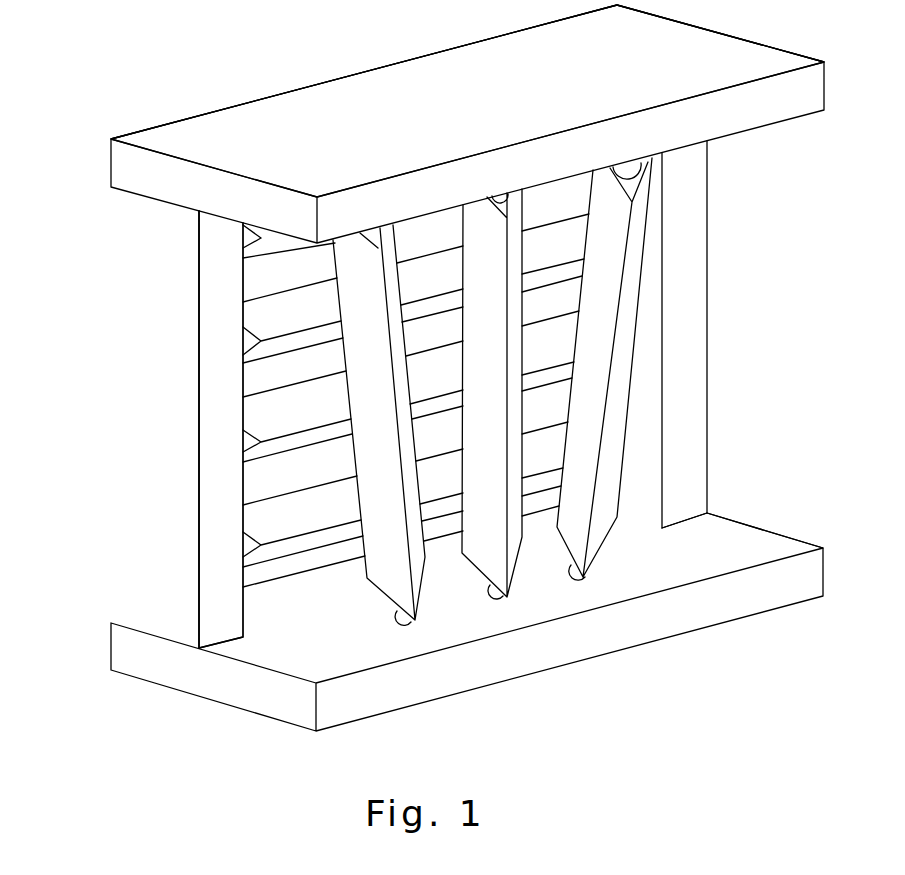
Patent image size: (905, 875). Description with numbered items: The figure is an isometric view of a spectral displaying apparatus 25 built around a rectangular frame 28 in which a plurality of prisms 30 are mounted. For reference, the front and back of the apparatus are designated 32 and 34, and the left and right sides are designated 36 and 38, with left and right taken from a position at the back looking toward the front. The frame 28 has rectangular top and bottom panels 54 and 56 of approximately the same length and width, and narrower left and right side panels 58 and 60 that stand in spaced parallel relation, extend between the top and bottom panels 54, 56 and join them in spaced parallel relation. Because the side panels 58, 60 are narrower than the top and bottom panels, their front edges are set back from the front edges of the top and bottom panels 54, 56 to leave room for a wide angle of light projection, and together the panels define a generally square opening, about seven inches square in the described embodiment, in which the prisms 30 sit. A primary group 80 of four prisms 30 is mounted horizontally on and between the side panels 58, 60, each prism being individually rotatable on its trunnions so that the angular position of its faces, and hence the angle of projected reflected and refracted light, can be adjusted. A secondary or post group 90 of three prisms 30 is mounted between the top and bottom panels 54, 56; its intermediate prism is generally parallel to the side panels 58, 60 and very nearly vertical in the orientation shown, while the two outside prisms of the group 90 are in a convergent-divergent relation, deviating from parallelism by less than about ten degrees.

The spectral displaying apparatus 25 is at (263, 76).
The rectangular frame 28 is at (100, 190).
The back of the apparatus 34 is at (342, 63).
The top panel 54 is at (596, 77).
The front of the apparatus 32 is at (561, 192).
The left side of the apparatus 36 is at (812, 224).
The secondary group of prisms 90 is at (648, 307).
The right side panel 60 is at (185, 374).
The prisms 30 is at (385, 470).
The right side of the apparatus 38 is at (90, 504).
The left side panel 58 is at (662, 508).
The bottom panel 56 is at (567, 611).
The primary group of prisms 80 is at (295, 563).